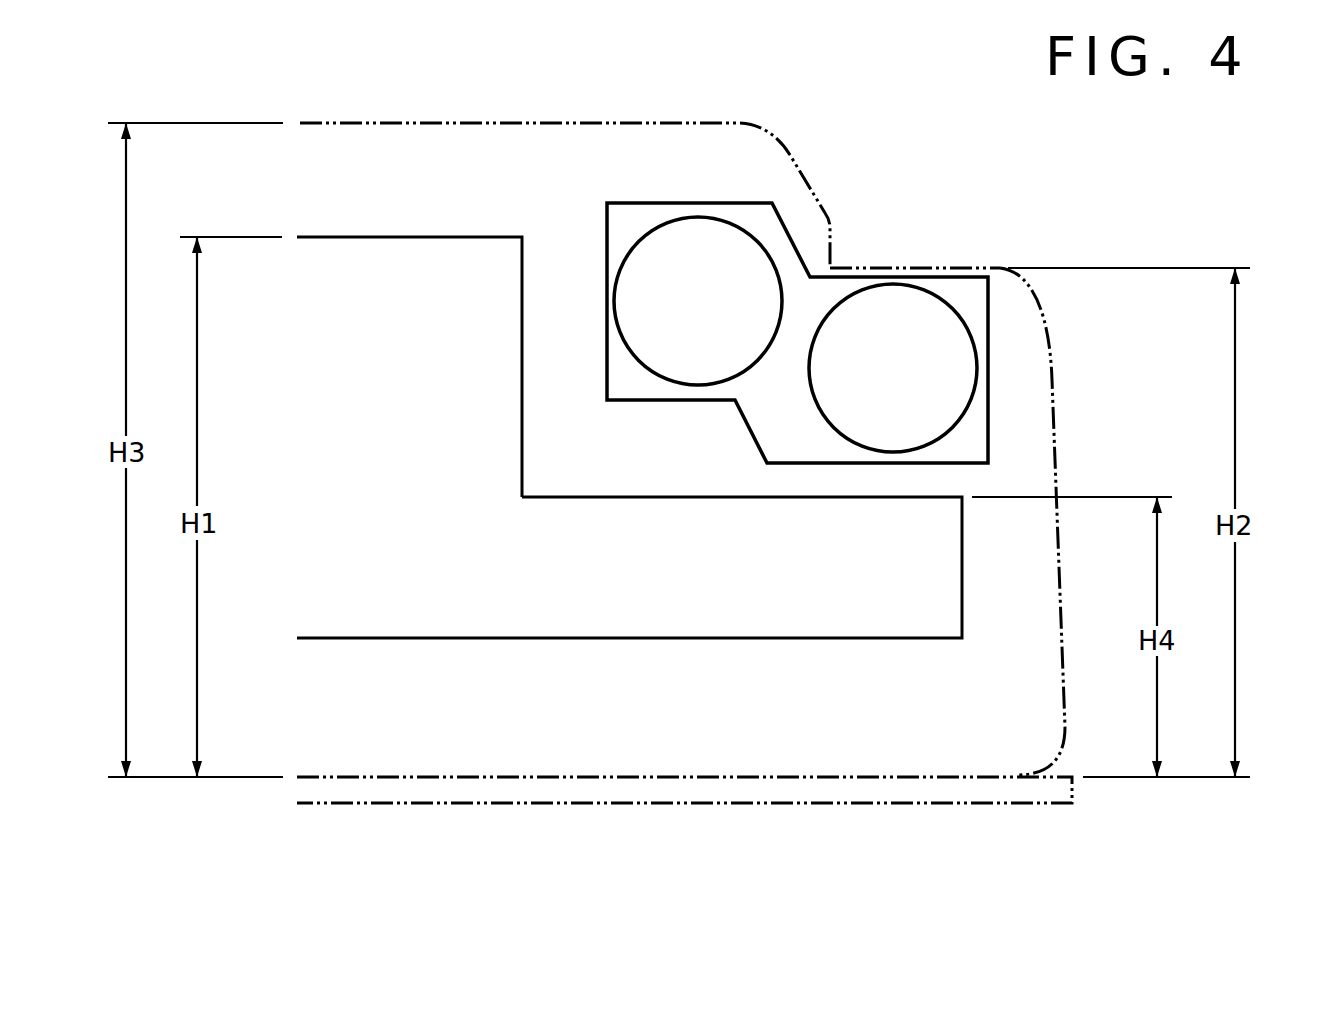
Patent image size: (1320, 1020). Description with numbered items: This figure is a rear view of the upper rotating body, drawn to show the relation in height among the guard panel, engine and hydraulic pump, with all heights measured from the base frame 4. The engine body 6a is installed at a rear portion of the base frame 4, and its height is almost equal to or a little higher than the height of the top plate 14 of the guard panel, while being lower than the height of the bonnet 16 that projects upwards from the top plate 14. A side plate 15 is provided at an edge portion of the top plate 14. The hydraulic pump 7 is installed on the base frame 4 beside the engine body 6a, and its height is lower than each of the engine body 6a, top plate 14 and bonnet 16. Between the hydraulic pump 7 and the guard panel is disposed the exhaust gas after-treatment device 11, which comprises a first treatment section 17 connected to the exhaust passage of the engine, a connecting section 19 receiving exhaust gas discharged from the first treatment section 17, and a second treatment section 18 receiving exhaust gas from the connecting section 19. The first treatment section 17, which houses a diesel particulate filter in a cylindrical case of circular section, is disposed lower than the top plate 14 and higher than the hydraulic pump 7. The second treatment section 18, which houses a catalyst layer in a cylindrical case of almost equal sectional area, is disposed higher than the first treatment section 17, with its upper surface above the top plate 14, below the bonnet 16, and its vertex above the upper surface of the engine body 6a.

The base frame 4 is at (1072, 790).
The engine body 6a is at (393, 608).
The hydraulic pump 7 is at (825, 605).
The exhaust gas after-treatment device 11 is at (746, 401).
The top plate 14 is at (925, 268).
The side plate 15 is at (1057, 437).
The bonnet 16 is at (506, 117).
The first treatment section 17 is at (960, 360).
The second treatment section 18 is at (690, 237).
The connecting section 19 is at (632, 380).